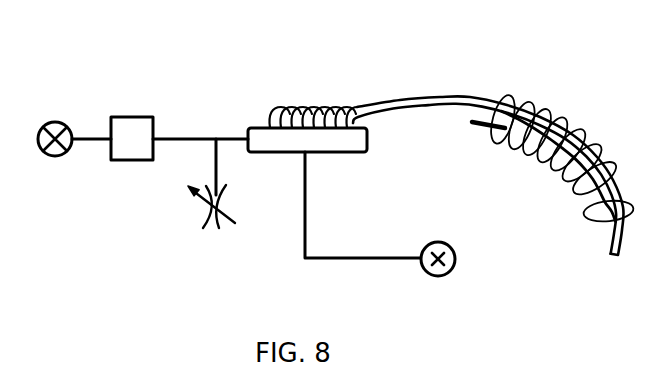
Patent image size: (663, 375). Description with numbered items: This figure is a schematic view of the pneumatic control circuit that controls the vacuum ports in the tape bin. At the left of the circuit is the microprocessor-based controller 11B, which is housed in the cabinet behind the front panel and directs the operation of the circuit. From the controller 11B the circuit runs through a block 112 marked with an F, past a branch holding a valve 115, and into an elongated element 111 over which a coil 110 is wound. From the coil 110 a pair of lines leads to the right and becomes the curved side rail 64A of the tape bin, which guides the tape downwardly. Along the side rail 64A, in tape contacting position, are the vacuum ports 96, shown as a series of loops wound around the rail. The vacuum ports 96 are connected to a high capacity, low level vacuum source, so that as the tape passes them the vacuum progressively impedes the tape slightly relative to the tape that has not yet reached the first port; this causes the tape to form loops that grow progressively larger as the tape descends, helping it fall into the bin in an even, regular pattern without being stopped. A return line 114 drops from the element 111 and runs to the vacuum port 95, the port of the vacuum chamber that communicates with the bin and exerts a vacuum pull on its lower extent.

The microprocessor-based controller 11B is at (55, 122).
The filter 112 is at (146, 117).
The heating coil 110 is at (333, 106).
The heater block 111 is at (350, 152).
The return conduit 114 is at (303, 258).
The flow control valve 115 is at (206, 216).
The vacuum port 95 is at (449, 275).
The vacuum ports 96 is at (560, 204).
The side rail 64A is at (605, 229).